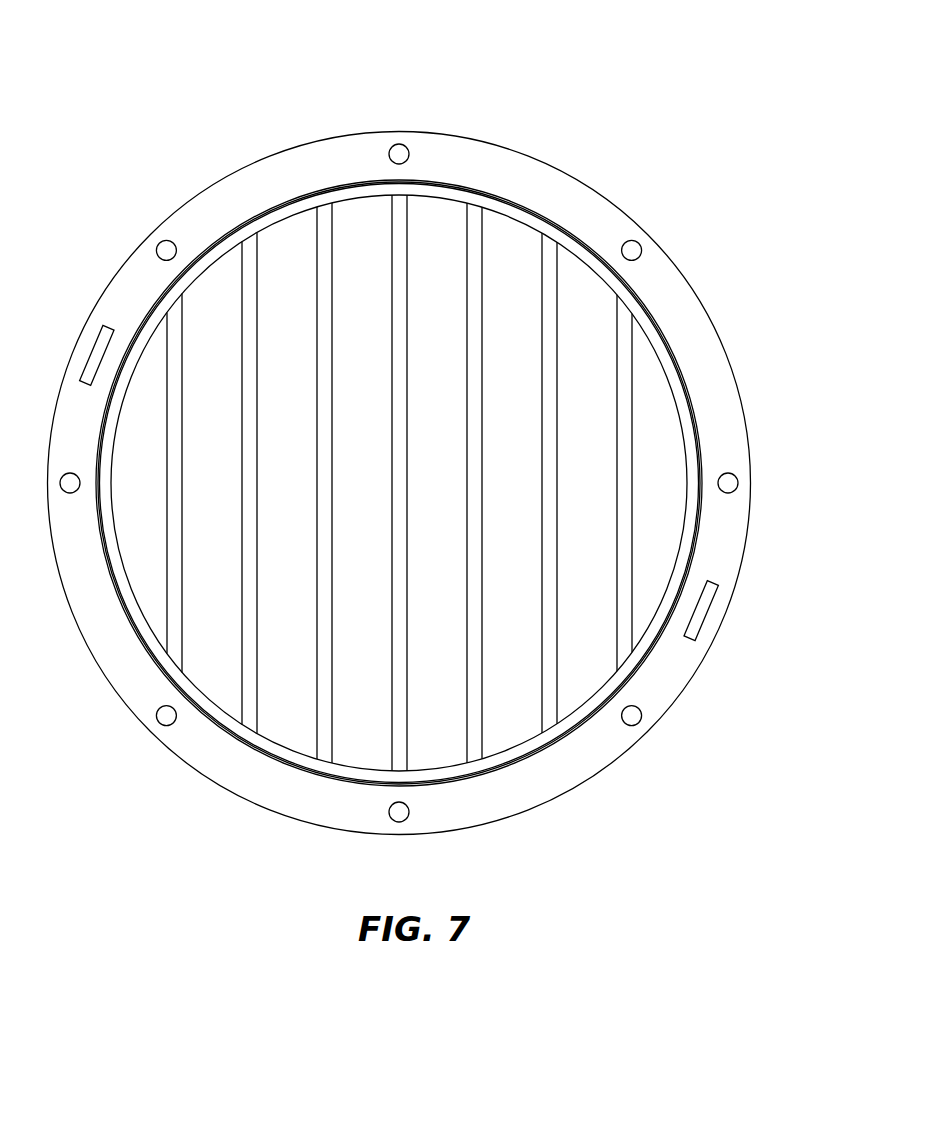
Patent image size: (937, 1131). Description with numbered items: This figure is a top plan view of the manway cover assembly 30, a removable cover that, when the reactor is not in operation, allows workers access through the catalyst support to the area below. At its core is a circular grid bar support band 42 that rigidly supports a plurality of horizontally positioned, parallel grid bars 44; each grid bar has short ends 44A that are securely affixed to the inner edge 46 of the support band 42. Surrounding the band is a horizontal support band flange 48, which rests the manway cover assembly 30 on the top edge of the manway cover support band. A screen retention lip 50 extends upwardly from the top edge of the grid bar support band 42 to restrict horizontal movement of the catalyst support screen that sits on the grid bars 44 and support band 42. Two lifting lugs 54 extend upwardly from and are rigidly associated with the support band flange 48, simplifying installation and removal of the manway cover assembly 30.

The manway cover assembly 30 is at (130, 60).
The grid bar support band 42 is at (450, 181).
The grid bars 44 is at (540, 388).
The short ends 44A is at (467, 203).
The inner edge 46 is at (684, 527).
The horizontal support band flange 48 is at (740, 436).
The screen retention lip 50 is at (680, 367).
The lifting lugs 54 is at (88, 356).